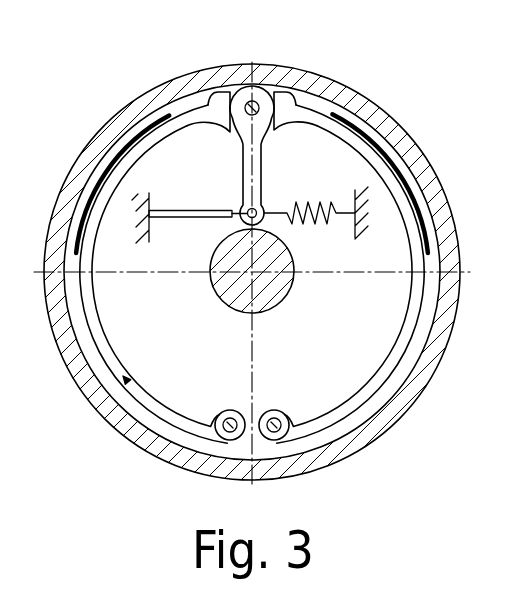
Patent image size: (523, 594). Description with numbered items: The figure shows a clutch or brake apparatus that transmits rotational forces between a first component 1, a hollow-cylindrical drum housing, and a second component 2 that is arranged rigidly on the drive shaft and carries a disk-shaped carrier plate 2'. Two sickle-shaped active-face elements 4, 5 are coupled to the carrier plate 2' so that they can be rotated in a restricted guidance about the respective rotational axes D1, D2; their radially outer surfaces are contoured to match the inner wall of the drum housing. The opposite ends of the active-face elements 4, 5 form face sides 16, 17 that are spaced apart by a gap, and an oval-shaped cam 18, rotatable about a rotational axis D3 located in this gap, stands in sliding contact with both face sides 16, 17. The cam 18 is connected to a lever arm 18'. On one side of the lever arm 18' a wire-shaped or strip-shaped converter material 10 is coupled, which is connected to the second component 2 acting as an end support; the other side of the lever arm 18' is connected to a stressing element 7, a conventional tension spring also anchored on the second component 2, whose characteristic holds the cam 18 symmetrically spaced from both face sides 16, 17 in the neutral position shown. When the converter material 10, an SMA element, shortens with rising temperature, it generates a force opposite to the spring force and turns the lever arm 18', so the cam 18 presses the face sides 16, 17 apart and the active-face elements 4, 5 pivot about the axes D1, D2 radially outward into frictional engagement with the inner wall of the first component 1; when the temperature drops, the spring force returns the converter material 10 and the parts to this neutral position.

The first component 1 is at (140, 103).
The second component 2 is at (252, 272).
The carrier plate 2' is at (242, 286).
The active-face element 4 is at (95, 320).
The active-face element 5 is at (403, 327).
The stressing element 7 is at (328, 207).
The converter material 10 is at (177, 213).
The face side 16 is at (228, 105).
The face side 17 is at (275, 110).
The cam 18 is at (349, 251).
The lever arm 18' is at (283, 155).
The rotational axis D1 is at (230, 433).
The rotational axis D2 is at (275, 433).
The rotational axis D3 is at (250, 101).